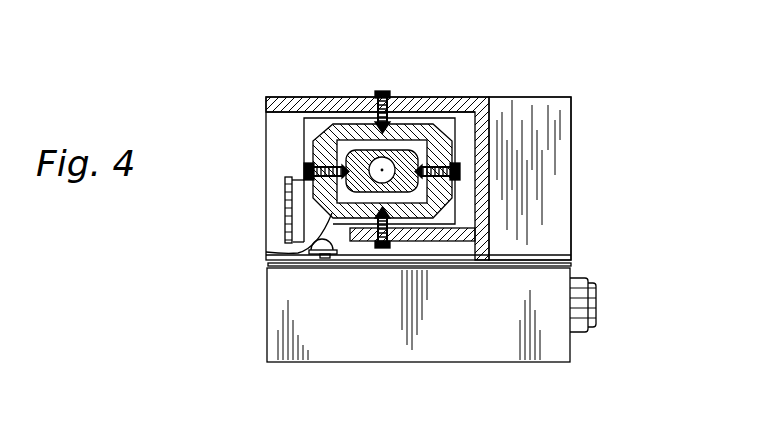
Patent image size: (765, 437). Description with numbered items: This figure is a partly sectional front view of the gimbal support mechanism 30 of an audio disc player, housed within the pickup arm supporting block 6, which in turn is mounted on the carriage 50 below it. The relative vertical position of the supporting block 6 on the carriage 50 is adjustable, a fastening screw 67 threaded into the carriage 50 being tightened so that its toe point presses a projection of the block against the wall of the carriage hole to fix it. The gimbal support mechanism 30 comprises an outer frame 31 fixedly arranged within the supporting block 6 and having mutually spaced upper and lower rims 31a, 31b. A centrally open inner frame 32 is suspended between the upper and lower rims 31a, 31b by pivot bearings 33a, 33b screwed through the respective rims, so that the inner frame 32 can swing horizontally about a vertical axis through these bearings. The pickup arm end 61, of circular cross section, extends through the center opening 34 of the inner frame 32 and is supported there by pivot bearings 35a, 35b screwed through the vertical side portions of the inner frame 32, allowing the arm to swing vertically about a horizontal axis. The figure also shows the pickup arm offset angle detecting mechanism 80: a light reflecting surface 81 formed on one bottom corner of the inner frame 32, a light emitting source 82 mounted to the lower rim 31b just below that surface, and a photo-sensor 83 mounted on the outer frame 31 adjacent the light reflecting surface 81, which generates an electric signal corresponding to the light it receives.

The pickup arm supporting block 6 is at (571, 205).
The gimbal support mechanism 30 is at (414, 217).
The outer frame 31 is at (492, 122).
The upper rim 31a is at (418, 100).
The lower rim 31b is at (443, 234).
The inner frame 32 is at (335, 118).
The pivot bearing 33a is at (384, 92).
The pivot bearing 33b is at (380, 252).
The center opening 34 is at (441, 130).
The pivot bearing 35a is at (305, 168).
The pivot bearing 35b is at (462, 170).
The pickup arm end 61 is at (357, 148).
The fastening screw 67 is at (596, 314).
The pickup arm offset angle detecting mechanism 80 is at (389, 291).
The light reflecting surface 81 is at (268, 252).
The light emitting source 82 is at (318, 258).
The photo-sensor 83 is at (285, 224).
The carriage 50 is at (528, 356).